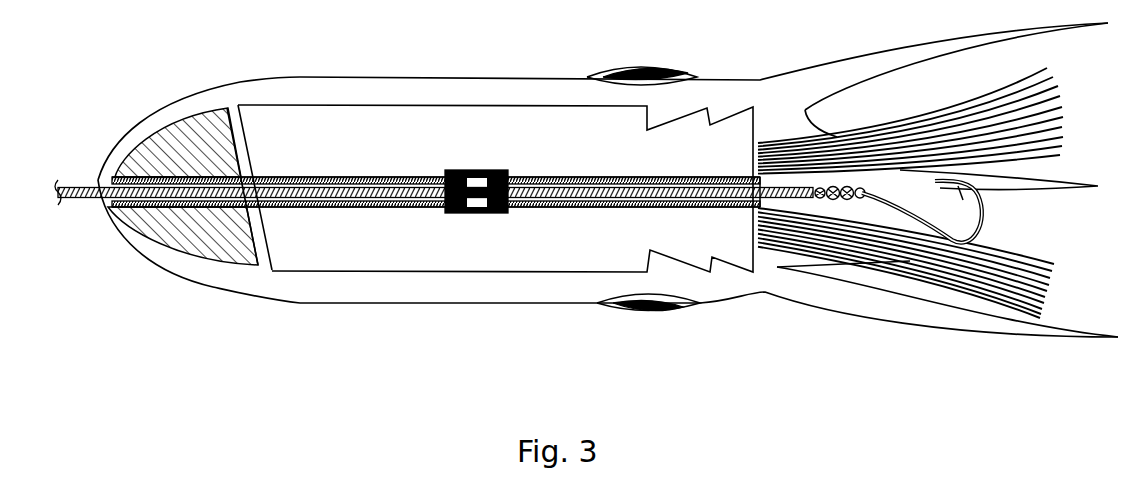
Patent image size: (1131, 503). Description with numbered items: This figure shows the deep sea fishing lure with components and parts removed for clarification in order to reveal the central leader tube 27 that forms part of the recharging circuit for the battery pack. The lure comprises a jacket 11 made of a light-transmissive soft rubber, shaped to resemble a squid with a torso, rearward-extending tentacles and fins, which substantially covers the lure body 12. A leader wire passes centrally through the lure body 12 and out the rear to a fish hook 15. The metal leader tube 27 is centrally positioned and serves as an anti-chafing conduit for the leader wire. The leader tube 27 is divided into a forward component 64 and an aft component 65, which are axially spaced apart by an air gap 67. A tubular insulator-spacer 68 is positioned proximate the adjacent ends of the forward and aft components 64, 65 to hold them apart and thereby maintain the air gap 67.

The jacket 11 is at (355, 78).
The lure body 12 is at (413, 90).
The fish hook 15 is at (987, 210).
The leader tube 27 is at (309, 174).
The forward component 64 is at (383, 208).
The aft component 65 is at (537, 208).
The air gap 67 is at (473, 213).
The tubular insulator-spacer 68 is at (458, 170).